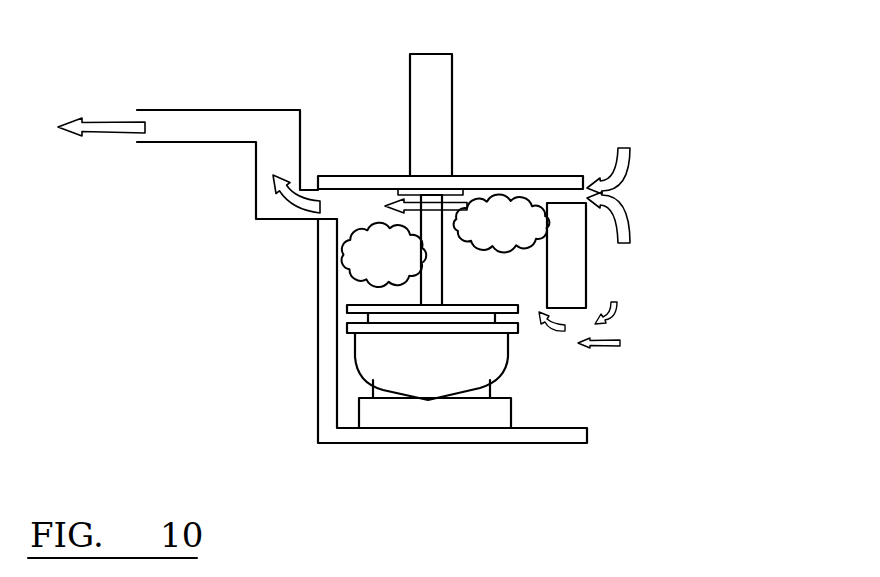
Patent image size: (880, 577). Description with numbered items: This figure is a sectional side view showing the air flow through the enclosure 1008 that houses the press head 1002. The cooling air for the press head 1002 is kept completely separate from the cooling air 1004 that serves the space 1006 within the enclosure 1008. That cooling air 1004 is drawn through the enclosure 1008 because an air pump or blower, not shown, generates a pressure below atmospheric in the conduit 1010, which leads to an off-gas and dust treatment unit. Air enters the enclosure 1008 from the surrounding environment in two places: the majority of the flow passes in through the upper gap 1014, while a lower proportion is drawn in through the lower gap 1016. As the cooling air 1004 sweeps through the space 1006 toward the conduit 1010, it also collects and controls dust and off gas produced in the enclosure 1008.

The press head 1002 is at (408, 318).
The cooling air 1004 is at (628, 170).
The space 1006 is at (503, 273).
The enclosure 1008 is at (298, 349).
The conduit 1010 is at (190, 123).
The upper gap 1014 is at (562, 195).
The lower gap 1016 is at (568, 380).